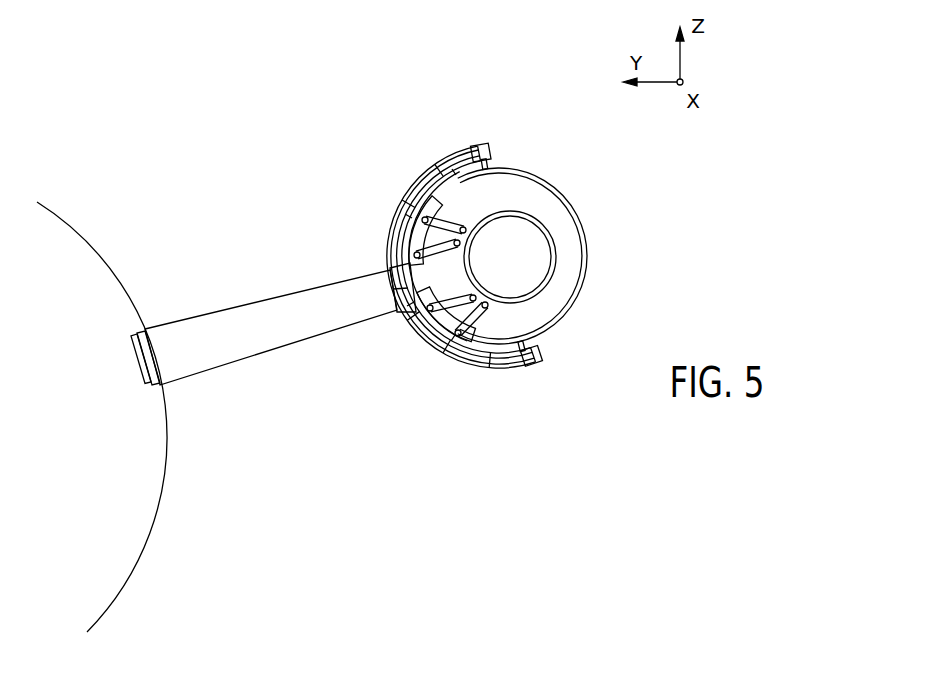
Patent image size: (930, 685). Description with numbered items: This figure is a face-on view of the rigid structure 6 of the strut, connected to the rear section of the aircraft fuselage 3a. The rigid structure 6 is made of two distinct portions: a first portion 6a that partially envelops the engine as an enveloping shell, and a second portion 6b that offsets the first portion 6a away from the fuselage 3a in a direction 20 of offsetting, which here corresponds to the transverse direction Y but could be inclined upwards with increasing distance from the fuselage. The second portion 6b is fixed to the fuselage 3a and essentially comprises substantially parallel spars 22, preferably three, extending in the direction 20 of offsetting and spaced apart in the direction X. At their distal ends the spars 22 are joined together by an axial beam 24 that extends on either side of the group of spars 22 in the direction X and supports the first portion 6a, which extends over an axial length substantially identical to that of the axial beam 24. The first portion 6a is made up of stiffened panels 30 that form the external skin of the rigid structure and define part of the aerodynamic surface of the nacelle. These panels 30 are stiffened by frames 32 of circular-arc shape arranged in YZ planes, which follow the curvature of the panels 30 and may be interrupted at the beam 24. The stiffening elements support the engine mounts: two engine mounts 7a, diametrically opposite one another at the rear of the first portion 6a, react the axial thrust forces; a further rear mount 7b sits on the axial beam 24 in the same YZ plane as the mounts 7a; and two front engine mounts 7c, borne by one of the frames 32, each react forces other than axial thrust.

The fuselage 3a is at (93, 247).
The rigid structure 6 is at (262, 170).
The first portion 6a is at (382, 200).
The second portion 6b is at (232, 385).
The engine mounts 7a is at (488, 167).
The rear mount 7b is at (420, 275).
The front engine mounts 7c is at (468, 297).
The direction of offsetting 20 is at (286, 277).
The spars 22 is at (193, 363).
The axial beam 24 is at (405, 300).
The stiffened panels 30 is at (438, 160).
The frames 32 is at (427, 183).